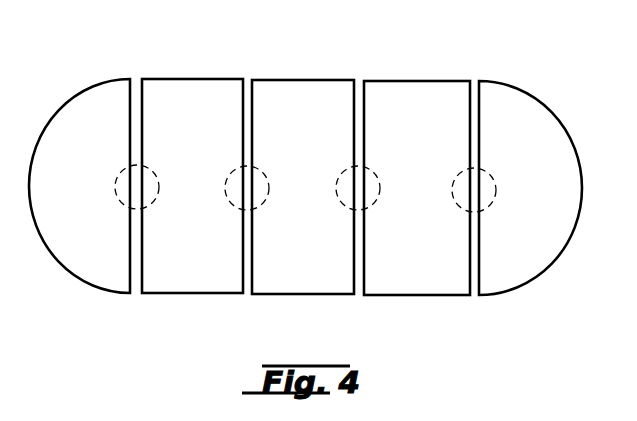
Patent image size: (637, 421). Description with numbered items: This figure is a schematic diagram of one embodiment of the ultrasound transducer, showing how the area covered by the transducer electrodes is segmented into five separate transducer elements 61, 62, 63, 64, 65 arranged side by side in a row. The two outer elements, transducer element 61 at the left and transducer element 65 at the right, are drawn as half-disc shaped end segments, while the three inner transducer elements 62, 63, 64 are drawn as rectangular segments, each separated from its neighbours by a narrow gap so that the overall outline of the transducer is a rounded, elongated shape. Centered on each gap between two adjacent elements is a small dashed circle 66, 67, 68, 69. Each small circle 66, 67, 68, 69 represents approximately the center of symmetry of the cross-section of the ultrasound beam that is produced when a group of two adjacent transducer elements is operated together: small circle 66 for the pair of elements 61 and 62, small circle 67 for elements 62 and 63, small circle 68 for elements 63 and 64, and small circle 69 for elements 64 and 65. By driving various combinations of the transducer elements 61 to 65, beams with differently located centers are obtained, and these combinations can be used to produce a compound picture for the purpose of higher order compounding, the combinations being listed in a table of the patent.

The transducer element 61 is at (100, 97).
The transducer element 62 is at (192, 91).
The transducer element 63 is at (305, 91).
The transducer element 64 is at (421, 91).
The transducer element 65 is at (517, 103).
The small circle 66 is at (120, 200).
The small circle 67 is at (228, 203).
The small circle 68 is at (342, 203).
The small circle 69 is at (458, 207).